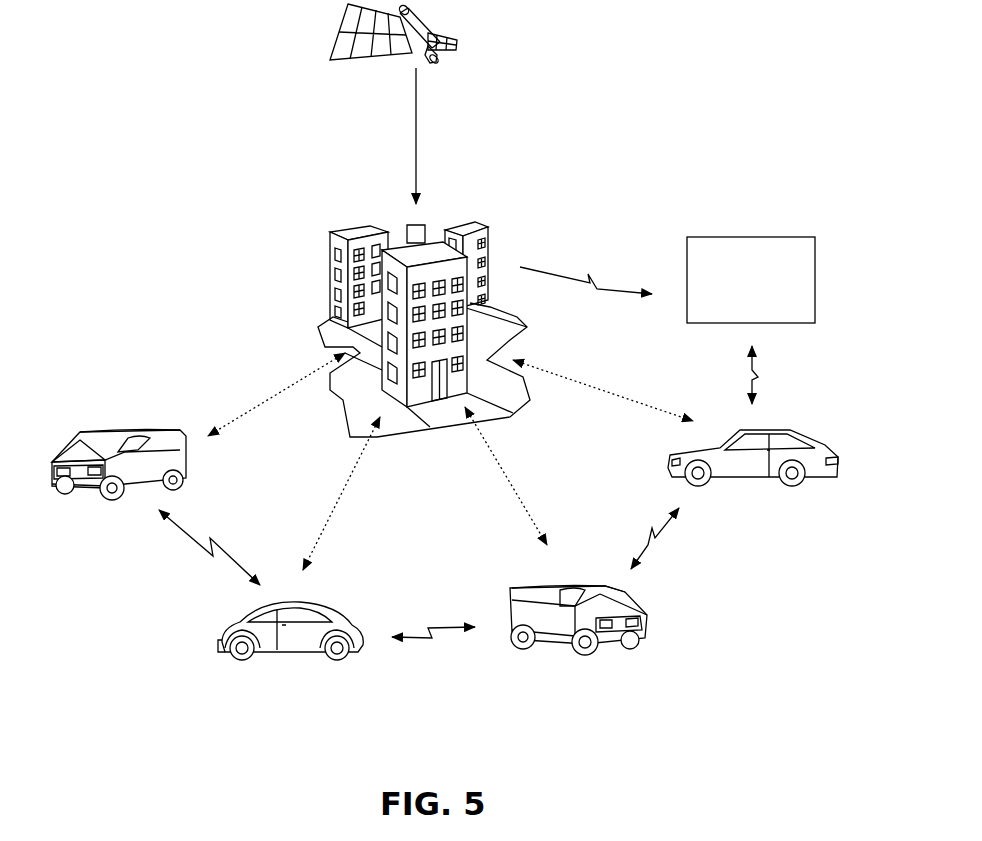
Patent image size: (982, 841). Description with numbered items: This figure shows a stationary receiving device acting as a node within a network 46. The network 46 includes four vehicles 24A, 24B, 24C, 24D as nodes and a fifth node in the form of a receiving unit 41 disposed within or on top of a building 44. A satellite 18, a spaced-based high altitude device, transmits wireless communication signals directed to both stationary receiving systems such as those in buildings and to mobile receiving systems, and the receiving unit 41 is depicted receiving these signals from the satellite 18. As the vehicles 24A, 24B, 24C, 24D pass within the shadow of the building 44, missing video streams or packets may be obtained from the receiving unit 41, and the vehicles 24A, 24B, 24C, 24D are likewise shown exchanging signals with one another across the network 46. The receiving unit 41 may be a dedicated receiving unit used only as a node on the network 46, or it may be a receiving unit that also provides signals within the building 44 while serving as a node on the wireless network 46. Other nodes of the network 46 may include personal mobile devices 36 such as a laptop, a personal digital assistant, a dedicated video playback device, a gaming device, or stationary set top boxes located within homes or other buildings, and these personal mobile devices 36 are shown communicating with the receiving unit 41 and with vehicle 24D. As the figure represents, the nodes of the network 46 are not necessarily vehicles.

The satellite 18 is at (424, 22).
The receiving unit 41 is at (430, 230).
The building 44 is at (338, 227).
The personal mobile devices 36 is at (750, 236).
The vehicle 24A is at (350, 623).
The vehicle 24B is at (112, 492).
The vehicle 24C is at (607, 646).
The vehicle 24D is at (752, 478).
The network 46 is at (120, 652).